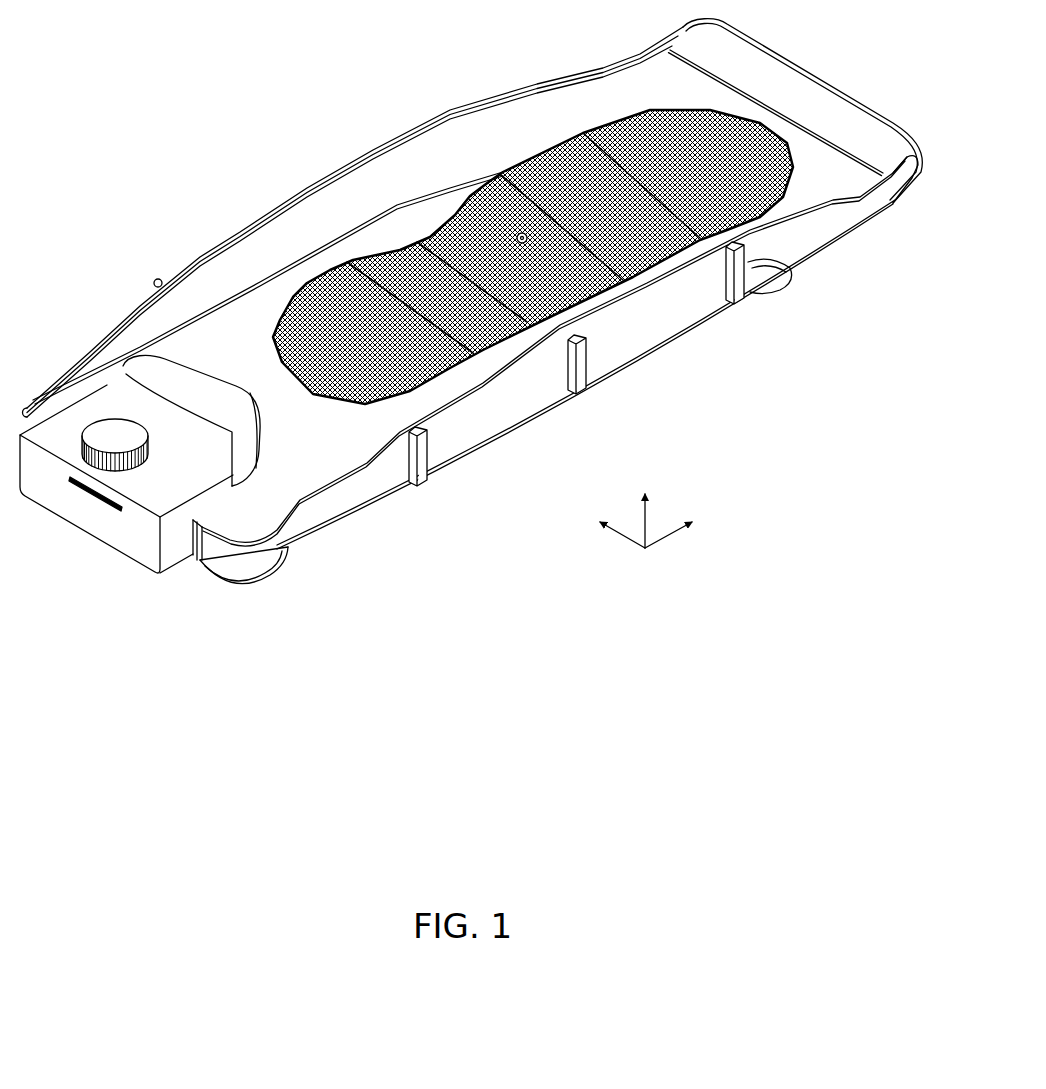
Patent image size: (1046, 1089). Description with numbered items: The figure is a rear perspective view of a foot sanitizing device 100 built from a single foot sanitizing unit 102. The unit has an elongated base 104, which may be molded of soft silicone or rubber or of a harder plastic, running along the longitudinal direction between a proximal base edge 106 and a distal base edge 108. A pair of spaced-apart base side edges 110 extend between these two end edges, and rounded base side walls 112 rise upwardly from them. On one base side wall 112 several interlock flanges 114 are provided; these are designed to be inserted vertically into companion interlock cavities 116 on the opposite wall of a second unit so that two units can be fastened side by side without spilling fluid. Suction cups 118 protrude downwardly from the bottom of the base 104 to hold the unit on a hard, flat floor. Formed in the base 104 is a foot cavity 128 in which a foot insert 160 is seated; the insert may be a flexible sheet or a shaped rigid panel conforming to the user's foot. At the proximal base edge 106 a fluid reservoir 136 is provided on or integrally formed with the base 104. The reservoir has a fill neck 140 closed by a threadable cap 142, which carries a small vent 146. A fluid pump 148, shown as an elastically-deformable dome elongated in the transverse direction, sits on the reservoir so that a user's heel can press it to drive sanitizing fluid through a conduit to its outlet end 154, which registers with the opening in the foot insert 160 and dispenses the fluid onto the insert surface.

The foot sanitizing device 100 is at (195, 102).
The foot sanitizing unit 102 is at (242, 192).
The base 104 is at (210, 345).
The proximal base edge 106 is at (193, 552).
The distal base edge 108 is at (815, 72).
The base side edges 110 is at (240, 288).
The base side walls 112 is at (410, 147).
The interlock flange 114 is at (426, 462).
The interlock cavity 116 is at (156, 279).
The suction cup 118 is at (247, 590).
The foot cavity 128 is at (577, 120).
The fluid reservoir 136 is at (80, 541).
The fill neck 140 is at (130, 477).
The cap 142 is at (83, 437).
The vent 146 is at (116, 436).
The fluid pump 148 is at (215, 405).
The outlet end 154 is at (522, 228).
The foot insert 160 is at (423, 224).